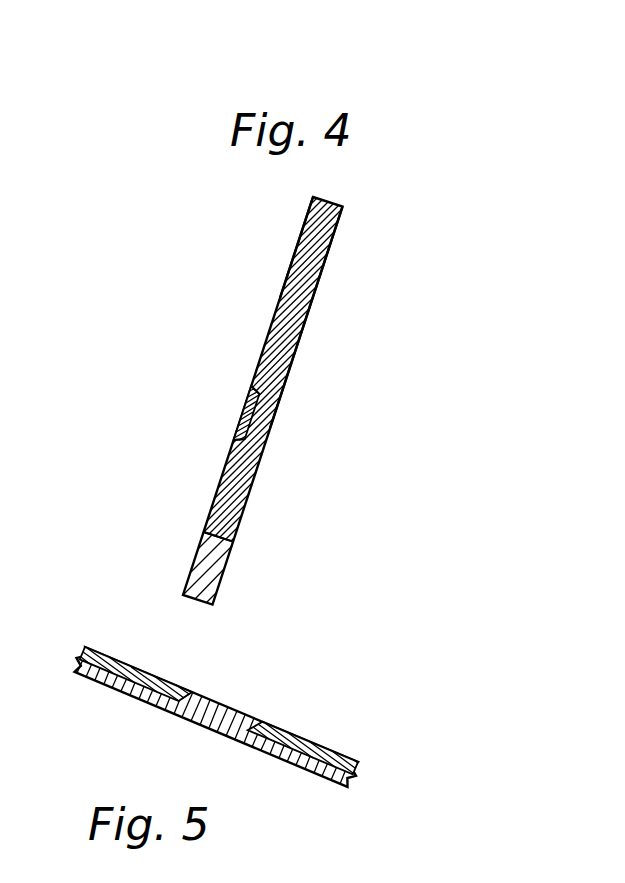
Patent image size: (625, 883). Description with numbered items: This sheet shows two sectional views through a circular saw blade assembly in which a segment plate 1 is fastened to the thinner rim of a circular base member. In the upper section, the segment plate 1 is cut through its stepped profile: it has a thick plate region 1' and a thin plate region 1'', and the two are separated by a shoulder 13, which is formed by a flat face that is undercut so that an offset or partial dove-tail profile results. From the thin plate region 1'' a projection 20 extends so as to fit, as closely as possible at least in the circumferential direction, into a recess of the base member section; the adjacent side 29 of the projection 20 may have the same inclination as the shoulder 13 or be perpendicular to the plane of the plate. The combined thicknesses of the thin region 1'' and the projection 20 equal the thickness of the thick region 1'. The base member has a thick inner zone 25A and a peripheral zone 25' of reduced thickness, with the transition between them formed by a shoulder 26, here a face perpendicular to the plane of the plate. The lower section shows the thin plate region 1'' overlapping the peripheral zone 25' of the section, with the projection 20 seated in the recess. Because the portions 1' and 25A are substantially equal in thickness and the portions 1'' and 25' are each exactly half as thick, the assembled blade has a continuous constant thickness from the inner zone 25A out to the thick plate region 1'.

In FIG. 4, the segment plate 1 is at (306, 401).
In FIG. 4, the thick plate region 1' is at (273, 247).
In FIG. 4, the thin plate region 1'' is at (319, 334).
In FIG. 5, the thin plate region 1'' is at (217, 747).
In FIG. 4, the shoulder 13 is at (250, 390).
In FIG. 4, the projection 20 is at (240, 480).
In FIG. 5, the projection 20 is at (228, 702).
In FIG. 4, the peripheral zone 25' is at (323, 413).
In FIG. 5, the peripheral zone 25' is at (322, 725).
In FIG. 4, the inner zone 25A is at (210, 560).
In FIG. 4, the shoulder 26 is at (230, 542).
In FIG. 4, the adjacent side 29 is at (242, 433).